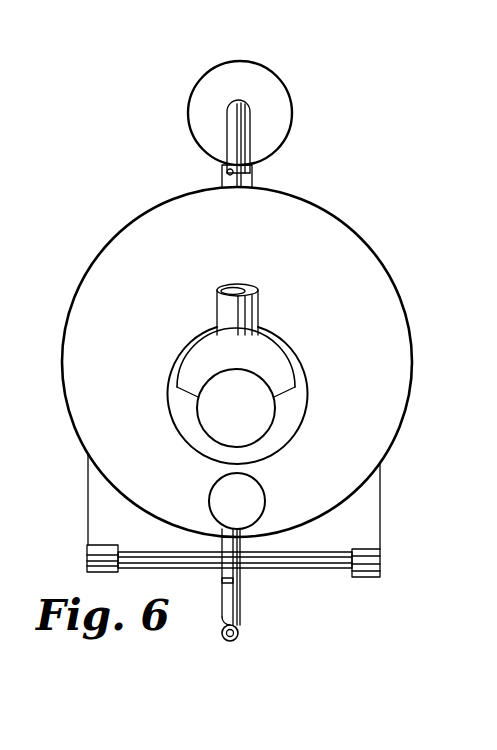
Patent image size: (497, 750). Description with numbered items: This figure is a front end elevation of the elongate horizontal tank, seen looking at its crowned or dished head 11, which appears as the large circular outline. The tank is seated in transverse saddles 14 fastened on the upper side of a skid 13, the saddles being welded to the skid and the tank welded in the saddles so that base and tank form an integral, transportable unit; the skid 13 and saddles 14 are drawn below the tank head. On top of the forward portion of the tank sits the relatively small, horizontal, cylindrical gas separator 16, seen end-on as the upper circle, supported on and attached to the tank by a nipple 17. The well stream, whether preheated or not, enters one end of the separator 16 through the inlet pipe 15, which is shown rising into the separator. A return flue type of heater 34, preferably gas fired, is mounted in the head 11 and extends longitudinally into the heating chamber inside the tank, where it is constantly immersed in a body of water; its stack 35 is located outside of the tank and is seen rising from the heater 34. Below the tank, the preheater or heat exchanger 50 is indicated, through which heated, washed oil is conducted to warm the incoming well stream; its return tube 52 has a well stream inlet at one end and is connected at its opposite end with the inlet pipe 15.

The crowned head 11 is at (200, 207).
The skid 13 is at (365, 555).
The saddle 14 is at (105, 498).
The inlet pipe 15 is at (232, 122).
The gas separator 16 is at (259, 62).
The nipple 17 is at (253, 173).
The return flue heater 34 is at (197, 408).
The stack 35 is at (255, 308).
The preheater 50 is at (240, 590).
The return tube 52 is at (240, 630).